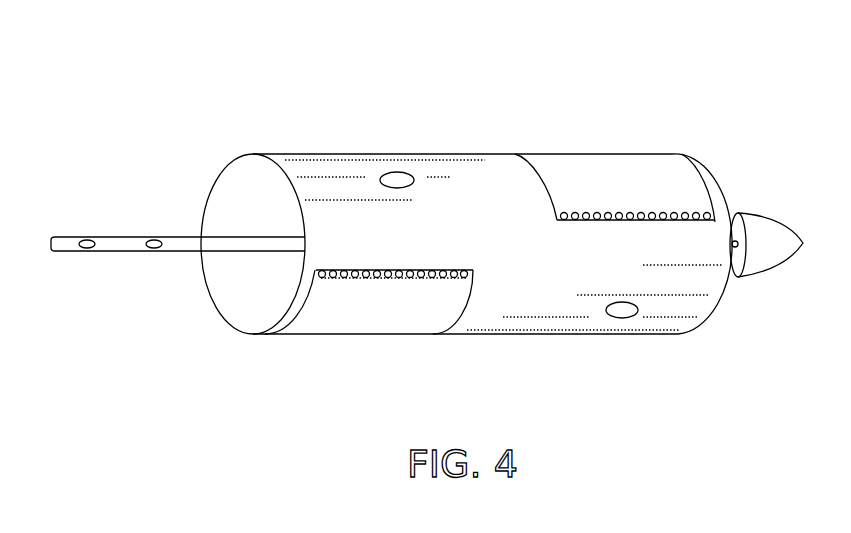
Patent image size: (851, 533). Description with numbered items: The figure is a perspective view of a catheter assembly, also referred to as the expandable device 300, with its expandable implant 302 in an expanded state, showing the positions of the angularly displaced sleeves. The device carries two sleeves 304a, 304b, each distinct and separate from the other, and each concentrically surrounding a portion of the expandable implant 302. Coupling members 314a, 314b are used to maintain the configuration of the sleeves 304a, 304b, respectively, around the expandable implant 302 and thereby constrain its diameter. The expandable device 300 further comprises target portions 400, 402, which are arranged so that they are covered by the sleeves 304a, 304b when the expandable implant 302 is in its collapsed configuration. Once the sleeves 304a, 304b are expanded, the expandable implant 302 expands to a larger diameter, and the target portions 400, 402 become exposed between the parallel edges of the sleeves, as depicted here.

The catheter assembly 300 is at (255, 100).
The expandable implant 302 is at (232, 330).
The sleeve 304a is at (350, 335).
The sleeve 304b is at (582, 154).
The coupling member 314a is at (180, 200).
The coupling member 314b is at (112, 287).
The target portion 400 is at (395, 173).
The target portion 402 is at (620, 318).